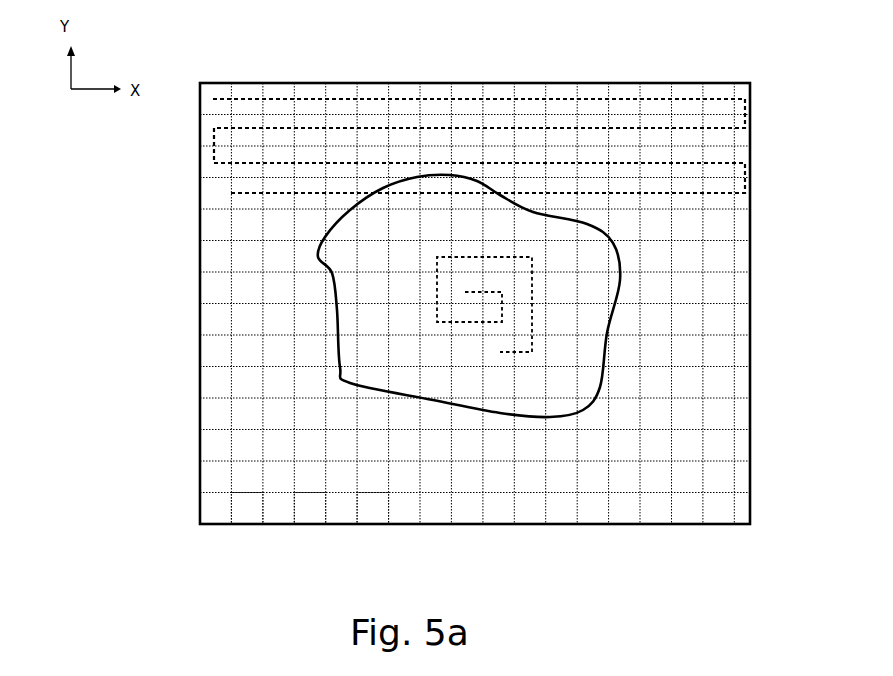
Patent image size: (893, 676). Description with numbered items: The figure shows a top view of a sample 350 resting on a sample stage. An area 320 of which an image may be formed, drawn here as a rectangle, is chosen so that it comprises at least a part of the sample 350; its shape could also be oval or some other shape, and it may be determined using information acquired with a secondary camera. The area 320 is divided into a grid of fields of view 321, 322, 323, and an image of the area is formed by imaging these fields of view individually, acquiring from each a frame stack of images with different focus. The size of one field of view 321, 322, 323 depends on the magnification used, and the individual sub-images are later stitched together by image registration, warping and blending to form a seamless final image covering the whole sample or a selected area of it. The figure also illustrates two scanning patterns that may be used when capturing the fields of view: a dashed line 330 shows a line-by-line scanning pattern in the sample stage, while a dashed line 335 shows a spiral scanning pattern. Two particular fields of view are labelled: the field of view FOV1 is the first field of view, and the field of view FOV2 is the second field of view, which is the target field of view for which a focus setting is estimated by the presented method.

The area 320 is at (647, 525).
The field of view 321 is at (250, 503).
The field of view 322 is at (312, 508).
The field of view 323 is at (368, 512).
The dashed line 330 is at (688, 98).
The dashed line 335 is at (510, 352).
The sample 350 is at (558, 417).
The first field of view FOV1 is at (372, 253).
The second field of view FOV2 is at (413, 253).